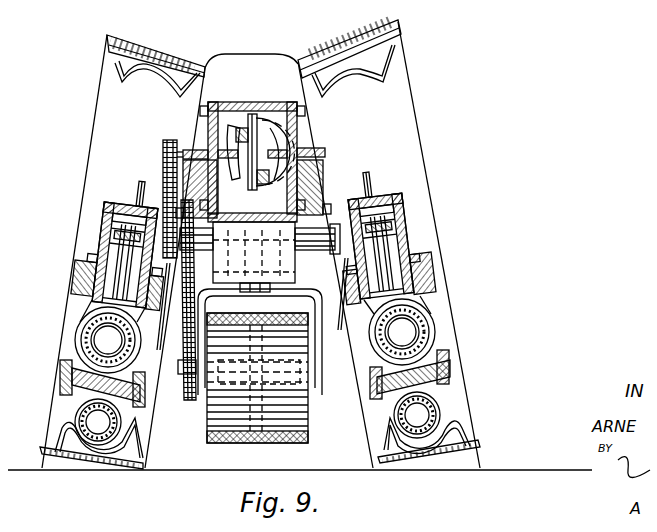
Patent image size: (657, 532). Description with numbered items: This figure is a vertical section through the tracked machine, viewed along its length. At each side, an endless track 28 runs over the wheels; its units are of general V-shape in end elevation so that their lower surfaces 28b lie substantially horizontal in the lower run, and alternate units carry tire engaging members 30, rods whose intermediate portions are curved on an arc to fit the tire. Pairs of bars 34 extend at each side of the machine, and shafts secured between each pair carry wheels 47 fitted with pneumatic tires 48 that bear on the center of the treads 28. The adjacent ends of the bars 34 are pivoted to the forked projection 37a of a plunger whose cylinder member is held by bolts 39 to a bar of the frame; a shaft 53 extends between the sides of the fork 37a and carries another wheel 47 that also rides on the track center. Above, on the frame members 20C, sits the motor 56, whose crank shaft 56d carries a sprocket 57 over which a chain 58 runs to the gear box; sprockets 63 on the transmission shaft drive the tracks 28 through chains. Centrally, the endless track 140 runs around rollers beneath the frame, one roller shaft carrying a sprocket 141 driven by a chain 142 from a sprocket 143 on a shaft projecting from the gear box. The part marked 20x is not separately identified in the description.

The endless track 28 is at (251, 57).
The lower surface of track unit 28b is at (42, 456).
The tire engaging member 30 is at (116, 72).
The bar 34 is at (60, 380).
The projection 37a is at (88, 325).
The bolt 39 is at (449, 245).
The frame member 20C is at (172, 178).
The frame yoke 20x is at (253, 326).
The wheel 47 is at (246, 418).
The pneumatic tire 48 is at (118, 430).
The shaft 53 is at (80, 360).
The motor 56 is at (297, 126).
The crank shaft 56d is at (300, 160).
The sprocket 57 is at (171, 140).
The chain 58 is at (183, 165).
The sprocket 63 is at (333, 254).
The endless track 140 is at (292, 445).
The sprocket 141 is at (188, 400).
The chain 142 is at (185, 375).
The sprocket 143 is at (237, 257).